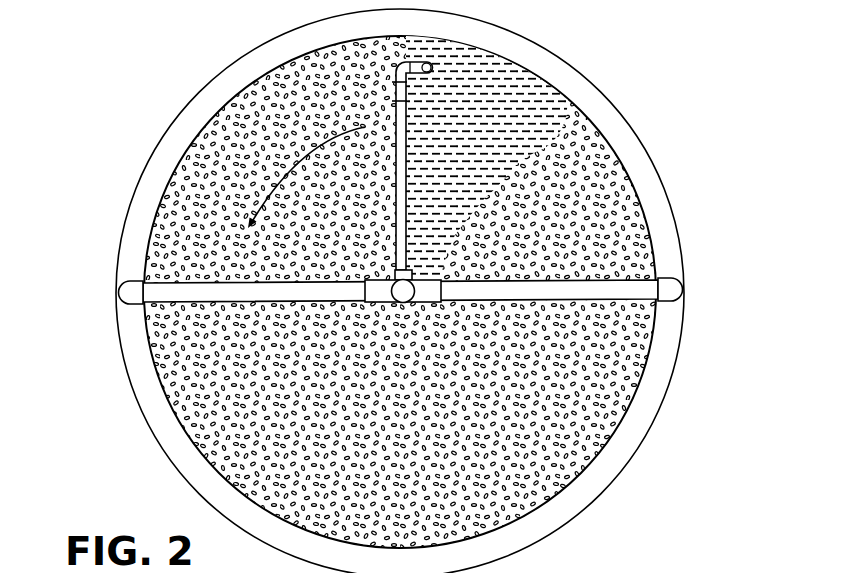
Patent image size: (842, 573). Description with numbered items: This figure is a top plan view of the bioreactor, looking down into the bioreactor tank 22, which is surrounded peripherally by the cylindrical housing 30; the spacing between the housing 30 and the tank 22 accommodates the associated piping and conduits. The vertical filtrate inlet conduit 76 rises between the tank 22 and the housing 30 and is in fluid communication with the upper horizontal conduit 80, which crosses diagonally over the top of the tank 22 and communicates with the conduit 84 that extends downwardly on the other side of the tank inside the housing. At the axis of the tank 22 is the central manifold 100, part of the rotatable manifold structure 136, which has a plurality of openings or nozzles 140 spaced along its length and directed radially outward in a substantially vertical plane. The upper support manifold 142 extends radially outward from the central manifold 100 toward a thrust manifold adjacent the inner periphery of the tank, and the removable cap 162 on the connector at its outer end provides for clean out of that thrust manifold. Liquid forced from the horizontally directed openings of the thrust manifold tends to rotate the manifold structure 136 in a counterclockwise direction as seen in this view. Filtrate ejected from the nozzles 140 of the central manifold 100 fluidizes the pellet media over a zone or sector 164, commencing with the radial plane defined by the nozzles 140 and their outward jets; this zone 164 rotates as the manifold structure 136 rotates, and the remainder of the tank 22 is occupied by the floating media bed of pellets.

The bioreactor tank 22 is at (623, 418).
The cylindrical housing 30 is at (628, 462).
The vertical filtrate inlet conduit 76 is at (118, 292).
The upper horizontal conduit 80 is at (202, 303).
The conduit 84 is at (672, 288).
The central manifold 100 is at (403, 291).
The upper support manifold 142 is at (402, 184).
The removable cap 162 is at (432, 67).
The zone or sector 164 is at (533, 107).
The openings or nozzles 140 is at (588, 566).
The manifold structure 136 is at (754, 565).